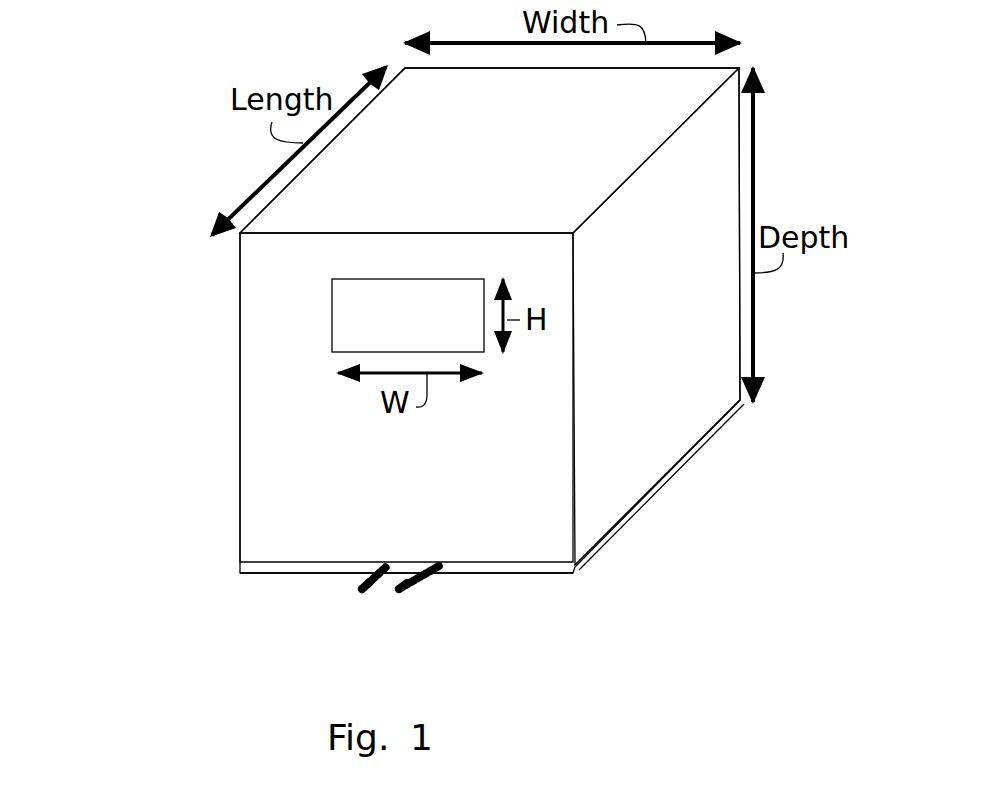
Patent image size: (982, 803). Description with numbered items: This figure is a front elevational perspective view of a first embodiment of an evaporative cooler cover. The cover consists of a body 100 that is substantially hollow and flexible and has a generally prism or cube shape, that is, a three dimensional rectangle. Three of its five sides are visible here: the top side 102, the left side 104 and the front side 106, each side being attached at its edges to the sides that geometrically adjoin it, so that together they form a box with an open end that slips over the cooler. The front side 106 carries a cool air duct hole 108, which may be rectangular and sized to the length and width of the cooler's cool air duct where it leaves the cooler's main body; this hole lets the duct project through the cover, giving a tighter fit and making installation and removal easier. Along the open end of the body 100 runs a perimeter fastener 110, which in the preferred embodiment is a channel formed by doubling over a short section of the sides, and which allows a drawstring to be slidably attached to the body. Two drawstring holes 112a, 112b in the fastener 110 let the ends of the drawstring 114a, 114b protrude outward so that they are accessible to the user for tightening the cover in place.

The body 100 is at (150, 18).
The top side 102 is at (467, 128).
The left side 104 is at (732, 198).
The front side 106 is at (282, 440).
The cool air duct hole 108 is at (385, 340).
The perimeter fastener 110 is at (658, 487).
The drawstring hole 112a is at (387, 565).
The drawstring hole 112b is at (437, 563).
The drawstring 114a is at (364, 592).
The drawstring 114b is at (401, 591).